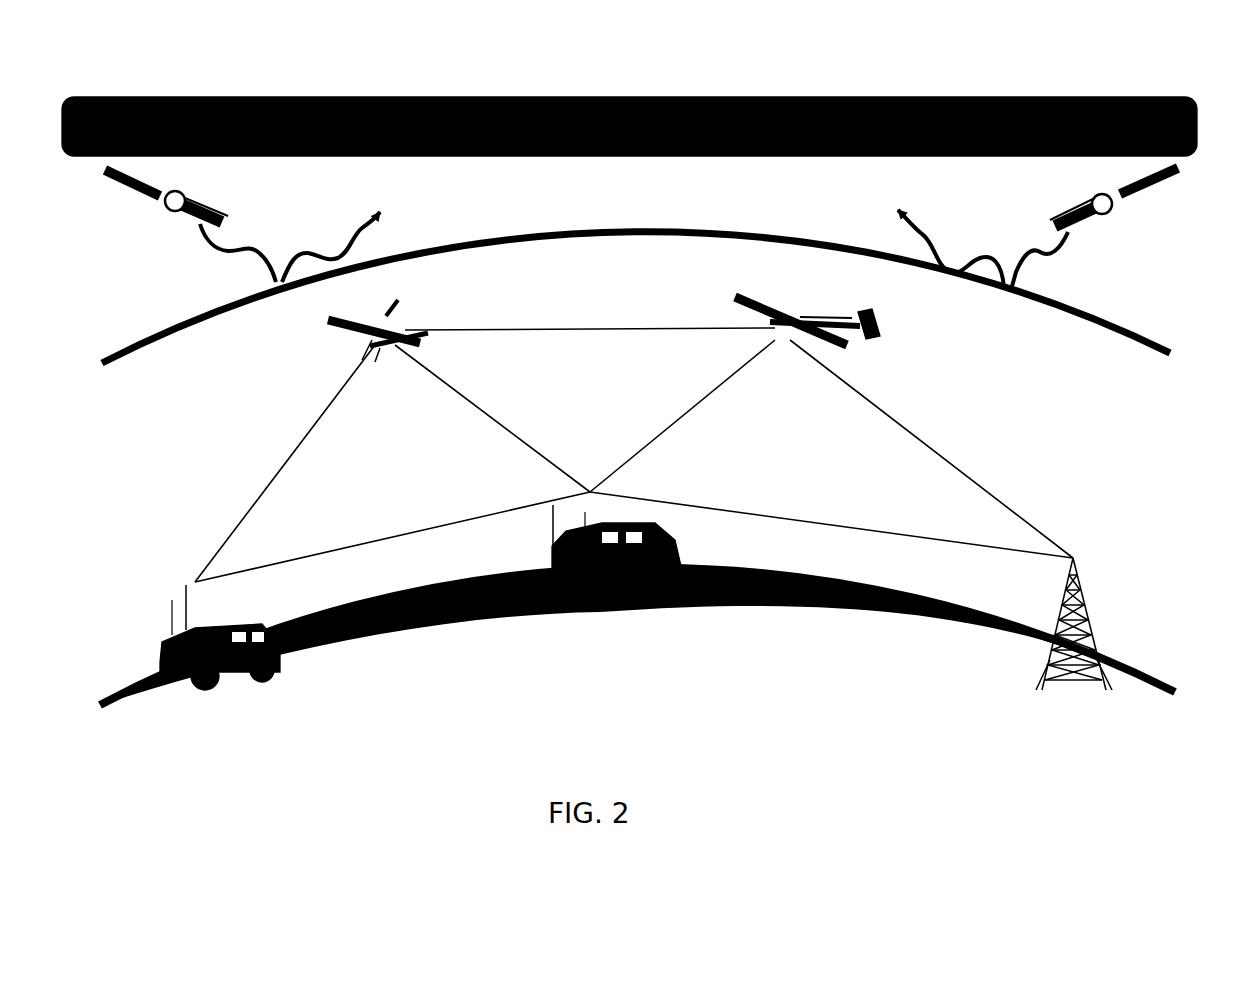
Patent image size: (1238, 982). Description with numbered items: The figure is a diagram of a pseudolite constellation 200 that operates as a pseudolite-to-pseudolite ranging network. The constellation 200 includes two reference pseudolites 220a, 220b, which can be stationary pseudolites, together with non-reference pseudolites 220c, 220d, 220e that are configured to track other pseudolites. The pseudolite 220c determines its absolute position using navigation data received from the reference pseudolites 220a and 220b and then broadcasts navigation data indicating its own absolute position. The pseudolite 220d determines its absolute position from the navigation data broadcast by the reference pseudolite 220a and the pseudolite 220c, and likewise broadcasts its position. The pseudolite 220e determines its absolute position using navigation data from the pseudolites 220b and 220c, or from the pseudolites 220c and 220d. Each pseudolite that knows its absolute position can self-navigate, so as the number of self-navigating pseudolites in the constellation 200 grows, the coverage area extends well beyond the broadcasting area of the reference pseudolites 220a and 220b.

The pseudolite constellation 200 is at (124, 66).
The reference pseudolite 220a is at (1079, 552).
The reference pseudolite 220b is at (256, 618).
The pseudolite 220c is at (690, 565).
The pseudolite 220d is at (894, 336).
The pseudolite 220e is at (406, 330).